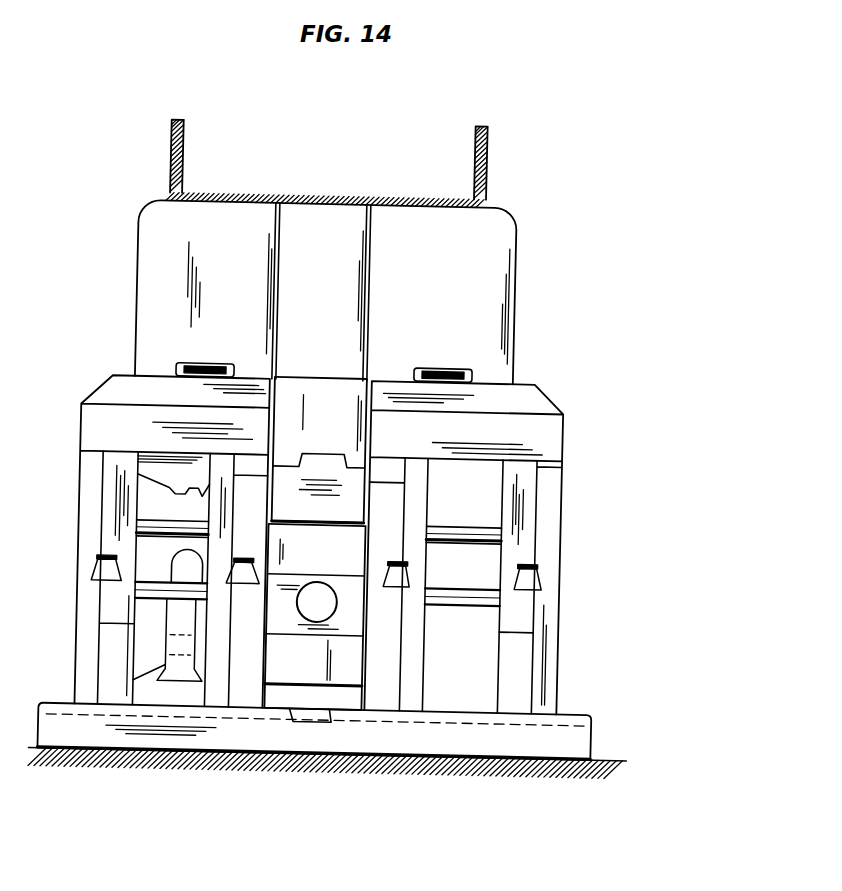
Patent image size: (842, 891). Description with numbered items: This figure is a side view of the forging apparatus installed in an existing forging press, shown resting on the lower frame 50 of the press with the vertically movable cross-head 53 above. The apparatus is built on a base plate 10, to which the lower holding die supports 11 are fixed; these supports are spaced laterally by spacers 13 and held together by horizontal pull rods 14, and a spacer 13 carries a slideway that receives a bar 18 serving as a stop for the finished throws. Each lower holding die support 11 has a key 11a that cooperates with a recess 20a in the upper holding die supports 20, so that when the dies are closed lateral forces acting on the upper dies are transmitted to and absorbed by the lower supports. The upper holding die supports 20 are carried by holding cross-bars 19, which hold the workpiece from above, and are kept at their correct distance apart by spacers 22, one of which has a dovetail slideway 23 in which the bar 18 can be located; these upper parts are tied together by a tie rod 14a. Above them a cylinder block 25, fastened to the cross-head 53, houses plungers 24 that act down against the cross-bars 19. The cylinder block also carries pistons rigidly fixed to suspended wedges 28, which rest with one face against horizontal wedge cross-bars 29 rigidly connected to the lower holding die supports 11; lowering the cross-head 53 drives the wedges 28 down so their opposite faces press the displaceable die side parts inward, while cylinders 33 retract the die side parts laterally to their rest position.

The base plate 10 is at (595, 731).
The lower holding die support 11 is at (118, 620).
The key 11a is at (97, 572).
The spacer 13 is at (152, 687).
The horizontal pull rod 14 is at (156, 604).
The tie rod 14a is at (168, 526).
The bar 18 is at (174, 554).
The holding cross-bar 19 is at (560, 432).
The upper holding die support 20 is at (398, 490).
The recess 20a is at (104, 560).
The spacer 22 is at (150, 456).
The dovetail slideway 23 is at (198, 488).
The plunger 24 is at (205, 366).
The cylinder block 25 is at (509, 262).
The wedge 28 is at (305, 456).
The wedge cross-bar 29 is at (300, 710).
The cylinder 33 is at (320, 584).
The lower frame 50 is at (440, 766).
The cross-head 53 is at (477, 158).